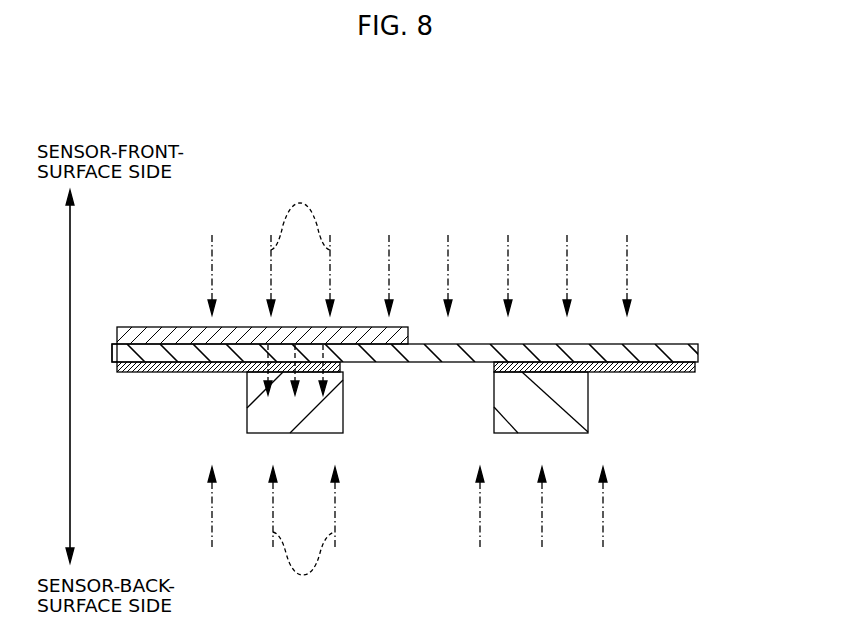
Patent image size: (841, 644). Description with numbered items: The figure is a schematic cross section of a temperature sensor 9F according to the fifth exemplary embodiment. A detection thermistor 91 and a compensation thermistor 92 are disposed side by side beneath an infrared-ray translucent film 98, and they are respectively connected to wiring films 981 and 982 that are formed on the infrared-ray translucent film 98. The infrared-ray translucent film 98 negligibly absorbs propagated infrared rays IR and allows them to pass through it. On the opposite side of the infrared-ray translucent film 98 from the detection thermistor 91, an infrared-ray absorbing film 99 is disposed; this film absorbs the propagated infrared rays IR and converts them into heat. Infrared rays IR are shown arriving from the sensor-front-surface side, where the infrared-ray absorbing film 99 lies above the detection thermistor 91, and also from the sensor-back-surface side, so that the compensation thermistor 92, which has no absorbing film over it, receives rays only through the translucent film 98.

The temperature sensor 9F is at (630, 200).
The infrared rays IR is at (303, 392).
The detection thermistor 91 is at (343, 404).
The compensation thermistor 92 is at (588, 404).
The infrared-ray translucent film 98 is at (698, 352).
The wiring film 981 is at (147, 373).
The wiring film 982 is at (695, 370).
The infrared-ray absorbing film 99 is at (144, 328).